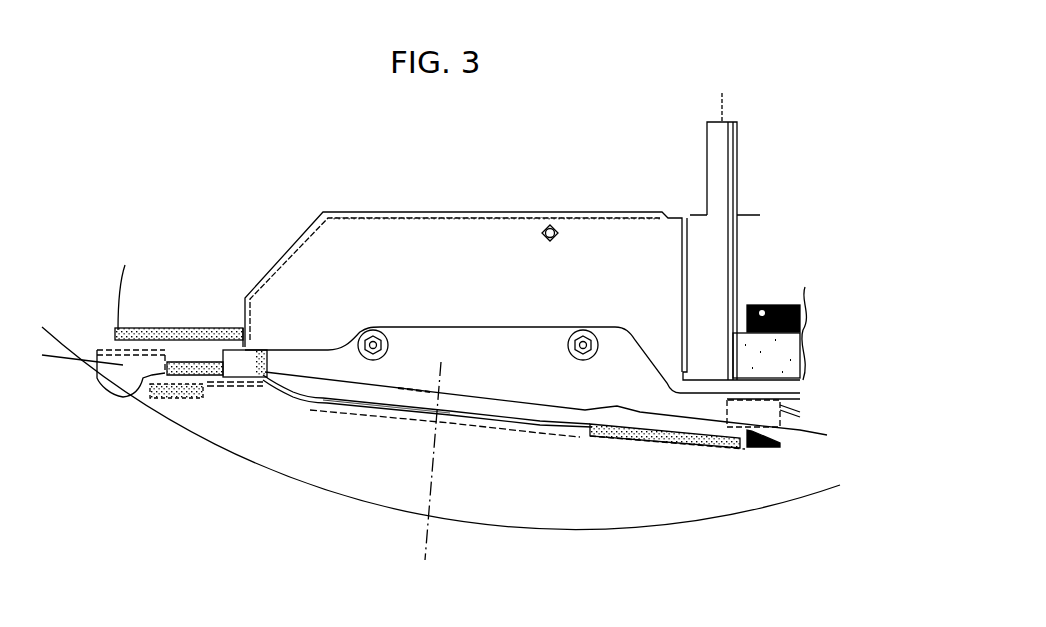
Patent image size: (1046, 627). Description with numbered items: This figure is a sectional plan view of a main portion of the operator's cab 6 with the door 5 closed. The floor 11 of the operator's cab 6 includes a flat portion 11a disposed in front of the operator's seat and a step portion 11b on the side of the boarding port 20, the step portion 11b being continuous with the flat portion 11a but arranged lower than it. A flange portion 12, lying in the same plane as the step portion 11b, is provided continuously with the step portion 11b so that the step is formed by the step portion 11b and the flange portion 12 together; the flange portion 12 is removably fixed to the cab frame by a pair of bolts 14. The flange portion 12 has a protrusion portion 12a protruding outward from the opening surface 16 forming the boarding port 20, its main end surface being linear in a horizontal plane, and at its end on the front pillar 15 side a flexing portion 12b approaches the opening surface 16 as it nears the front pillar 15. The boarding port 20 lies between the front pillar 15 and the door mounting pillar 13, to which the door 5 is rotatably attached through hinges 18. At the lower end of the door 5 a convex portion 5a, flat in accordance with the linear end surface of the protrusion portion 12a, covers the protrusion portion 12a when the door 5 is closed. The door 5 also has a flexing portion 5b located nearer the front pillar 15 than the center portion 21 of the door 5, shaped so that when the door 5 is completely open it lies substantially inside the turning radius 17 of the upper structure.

The door 5 is at (637, 441).
The convex portion 5a is at (370, 420).
The flexing portion 5b is at (280, 393).
The operator's cab 6 is at (760, 238).
The floor 11 is at (473, 149).
The flat portion 11a is at (597, 148).
The step portion 11b is at (638, 285).
The flange portion 12 is at (490, 385).
The protrusion portion 12a is at (528, 420).
The flexing portion 12b is at (297, 392).
The door mounting pillar 13 is at (740, 410).
The bolts 14 is at (373, 350).
The front pillar 15 is at (123, 380).
The opening surface 16 is at (115, 395).
The turning radius 17 is at (670, 522).
The hinges 18 is at (767, 437).
The boarding port 20 is at (402, 393).
The center portion 21 is at (427, 540).